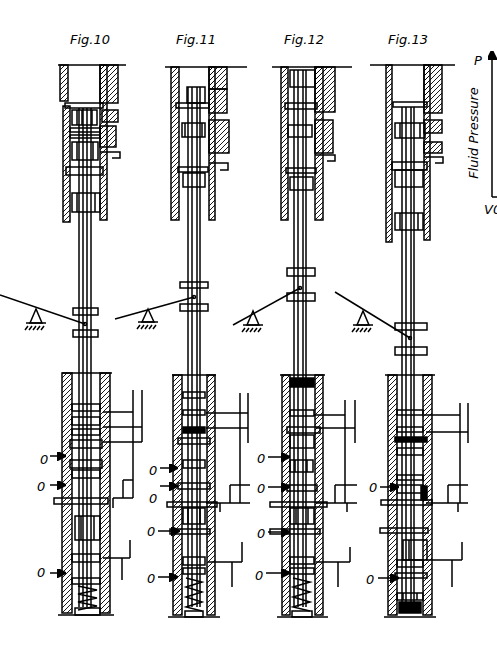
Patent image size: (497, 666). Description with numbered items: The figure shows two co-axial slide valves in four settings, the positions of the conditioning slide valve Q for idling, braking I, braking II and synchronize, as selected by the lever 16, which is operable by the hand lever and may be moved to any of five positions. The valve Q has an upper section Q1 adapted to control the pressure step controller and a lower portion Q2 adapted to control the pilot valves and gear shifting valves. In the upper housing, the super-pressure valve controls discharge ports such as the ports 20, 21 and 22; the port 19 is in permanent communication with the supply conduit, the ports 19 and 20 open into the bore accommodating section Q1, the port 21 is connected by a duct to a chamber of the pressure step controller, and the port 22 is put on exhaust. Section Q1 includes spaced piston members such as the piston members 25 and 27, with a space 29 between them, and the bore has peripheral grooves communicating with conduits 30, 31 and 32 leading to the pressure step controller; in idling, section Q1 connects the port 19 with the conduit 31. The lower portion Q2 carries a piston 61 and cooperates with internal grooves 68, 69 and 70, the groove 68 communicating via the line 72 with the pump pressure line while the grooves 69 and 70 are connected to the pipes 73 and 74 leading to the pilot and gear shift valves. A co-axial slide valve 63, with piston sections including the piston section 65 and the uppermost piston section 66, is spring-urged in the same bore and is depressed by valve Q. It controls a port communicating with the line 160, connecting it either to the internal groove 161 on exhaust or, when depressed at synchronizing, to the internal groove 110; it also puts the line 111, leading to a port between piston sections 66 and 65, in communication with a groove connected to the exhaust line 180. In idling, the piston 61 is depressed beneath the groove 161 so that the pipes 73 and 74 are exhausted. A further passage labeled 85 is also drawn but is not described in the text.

In FIG. 10, the lever 16 is at (64, 322).
In FIG. 11, the lever 16 is at (170, 307).
In FIG. 12, the lever 16 is at (276, 304).
In FIG. 13, the lever 16 is at (384, 324).
In FIG. 10, the port 19 is at (121, 158).
In FIG. 11, the port 19 is at (228, 162).
In FIG. 12, the port 19 is at (334, 159).
In FIG. 13, the port 19 is at (440, 161).
In FIG. 10, the discharge port 20 is at (116, 138).
In FIG. 11, the discharge port 20 is at (229, 139).
In FIG. 12, the discharge port 20 is at (324, 136).
In FIG. 13, the discharge port 20 is at (440, 131).
In FIG. 10, the discharge port 21 is at (118, 117).
In FIG. 10, the discharge port 22 is at (118, 98).
In FIG. 11, the discharge port 22 is at (229, 94).
In FIG. 13, the discharge port 22 is at (440, 100).
In FIG. 10, the piston member 25 is at (74, 207).
In FIG. 11, the piston member 25 is at (184, 185).
In FIG. 12, the piston member 25 is at (314, 184).
In FIG. 10, the piston member 27 is at (72, 117).
In FIG. 11, the space 29 is at (228, 106).
In FIG. 10, the conduit 30 is at (66, 171).
In FIG. 11, the conduit 30 is at (178, 169).
In FIG. 12, the conduit 30 is at (286, 170).
In FIG. 13, the conduit 30 is at (392, 167).
In FIG. 10, the conduit 31 is at (70, 131).
In FIG. 11, the conduit 31 is at (182, 129).
In FIG. 12, the conduit 31 is at (288, 131).
In FIG. 13, the conduit 31 is at (395, 130).
In FIG. 10, the conduit 32 is at (66, 104).
In FIG. 11, the conduit 32 is at (176, 104).
In FIG. 12, the conduit 32 is at (285, 104).
In FIG. 13, the conduit 32 is at (393, 103).
In FIG. 10, the piston 61 is at (54, 500).
In FIG. 11, the piston 61 is at (183, 431).
In FIG. 12, the piston 61 is at (314, 412).
In FIG. 13, the piston 61 is at (397, 450).
In FIG. 10, the slide valve 63 is at (76, 611).
In FIG. 12, the slide valve 63 is at (313, 475).
In FIG. 13, the slide valve 63 is at (426, 500).
In FIG. 10, the piston section 65 is at (80, 532).
In FIG. 10, the piston section 66 is at (101, 587).
In FIG. 10, the internal groove 68 is at (72, 407).
In FIG. 12, the internal groove 69 is at (287, 430).
In FIG. 13, the internal groove 69 is at (395, 438).
In FIG. 11, the internal groove 70 is at (178, 443).
In FIG. 12, the internal groove 70 is at (290, 442).
In FIG. 13, the internal groove 70 is at (397, 458).
In FIG. 10, the line 72 is at (117, 412).
In FIG. 11, the line 72 is at (226, 413).
In FIG. 12, the line 72 is at (334, 451).
In FIG. 13, the line 72 is at (442, 415).
In FIG. 10, the pipe 73 is at (142, 428).
In FIG. 11, the pipe 73 is at (250, 428).
In FIG. 12, the pipe 73 is at (357, 430).
In FIG. 13, the pipe 73 is at (446, 432).
In FIG. 10, the pipe 74 is at (118, 443).
In FIG. 11, the pipe 74 is at (228, 430).
In FIG. 12, the pipe 74 is at (352, 444).
In FIG. 13, the pipe 74 is at (466, 444).
In FIG. 10, the conduit 85 is at (132, 500).
In FIG. 11, the conduit 85 is at (228, 506).
In FIG. 12, the conduit 85 is at (336, 506).
In FIG. 13, the conduit 85 is at (450, 503).
In FIG. 10, the internal groove 110 is at (73, 525).
In FIG. 10, the line 111 is at (100, 559).
In FIG. 11, the line 111 is at (225, 564).
In FIG. 12, the line 111 is at (316, 563).
In FIG. 13, the line 111 is at (440, 562).
In FIG. 10, the line 160 is at (108, 463).
In FIG. 10, the internal groove 161 is at (72, 471).
In FIG. 11, the internal groove 161 is at (183, 466).
In FIG. 10, the line 180 is at (72, 581).
In FIG. 10, the conditioning slide valve Q is at (92, 275).
In FIG. 10, the upper section of conditioning valve Q1 is at (72, 148).
In FIG. 10, the lower section of conditioning valve Q2 is at (70, 445).